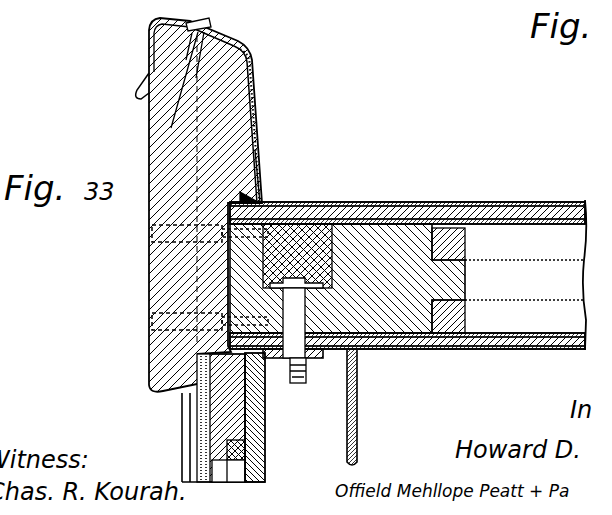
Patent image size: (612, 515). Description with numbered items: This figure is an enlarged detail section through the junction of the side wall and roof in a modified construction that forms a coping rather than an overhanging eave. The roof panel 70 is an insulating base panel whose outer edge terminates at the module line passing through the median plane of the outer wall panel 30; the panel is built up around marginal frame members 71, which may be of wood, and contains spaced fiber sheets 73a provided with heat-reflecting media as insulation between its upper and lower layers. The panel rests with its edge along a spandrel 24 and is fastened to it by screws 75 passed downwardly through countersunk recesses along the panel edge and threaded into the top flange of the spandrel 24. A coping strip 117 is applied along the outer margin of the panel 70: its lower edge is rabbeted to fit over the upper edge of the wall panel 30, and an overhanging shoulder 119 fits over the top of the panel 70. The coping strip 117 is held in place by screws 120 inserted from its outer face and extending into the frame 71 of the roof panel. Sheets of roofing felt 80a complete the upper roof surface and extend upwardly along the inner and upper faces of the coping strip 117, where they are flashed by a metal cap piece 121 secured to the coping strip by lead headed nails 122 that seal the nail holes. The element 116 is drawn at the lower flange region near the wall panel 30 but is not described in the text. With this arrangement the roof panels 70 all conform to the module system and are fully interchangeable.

The coping strip 117 is at (149, 153).
The metal cap piece 121 is at (250, 73).
The lead headed nails 122 is at (212, 28).
The overhanging shoulder 119 is at (262, 186).
The sheets of roofing felt 80a is at (462, 202).
The marginal frame members 71 is at (367, 236).
The spaced fiber sheets 73a is at (526, 259).
The roof panel 70 is at (446, 351).
The screws 75 is at (300, 370).
The screws 120 is at (150, 240).
The lower flange 116 is at (187, 395).
The outer wall panel 30 is at (266, 437).
The spandrels 24 is at (358, 399).